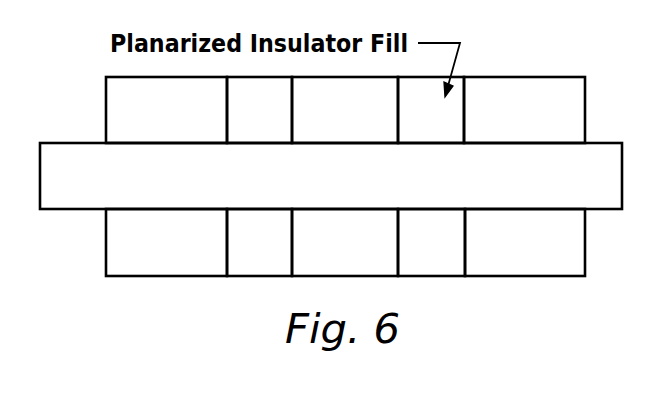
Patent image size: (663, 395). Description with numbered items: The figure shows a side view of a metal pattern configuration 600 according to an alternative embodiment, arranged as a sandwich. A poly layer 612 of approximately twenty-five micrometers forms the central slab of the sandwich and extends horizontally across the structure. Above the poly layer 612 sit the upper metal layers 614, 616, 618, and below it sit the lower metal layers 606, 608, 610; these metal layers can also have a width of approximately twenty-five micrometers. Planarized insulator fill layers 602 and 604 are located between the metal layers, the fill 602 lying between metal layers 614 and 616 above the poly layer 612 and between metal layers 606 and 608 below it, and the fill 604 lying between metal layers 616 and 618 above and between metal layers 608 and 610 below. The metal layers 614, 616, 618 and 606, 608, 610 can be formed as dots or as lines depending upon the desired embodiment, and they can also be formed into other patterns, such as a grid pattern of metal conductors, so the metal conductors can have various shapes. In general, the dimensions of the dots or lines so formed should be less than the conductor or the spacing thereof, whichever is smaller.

The metal pattern configuration 600 is at (82, 71).
The planarized insulator fill layer 602 is at (278, 131).
The planarized insulator fill layer 604 is at (449, 131).
The metal layer 606 is at (185, 259).
The metal layer 608 is at (363, 259).
The metal layer 610 is at (543, 259).
The poly layer 612 is at (363, 192).
The metal layer 614 is at (185, 131).
The metal layer 616 is at (363, 131).
The metal layer 618 is at (542, 131).